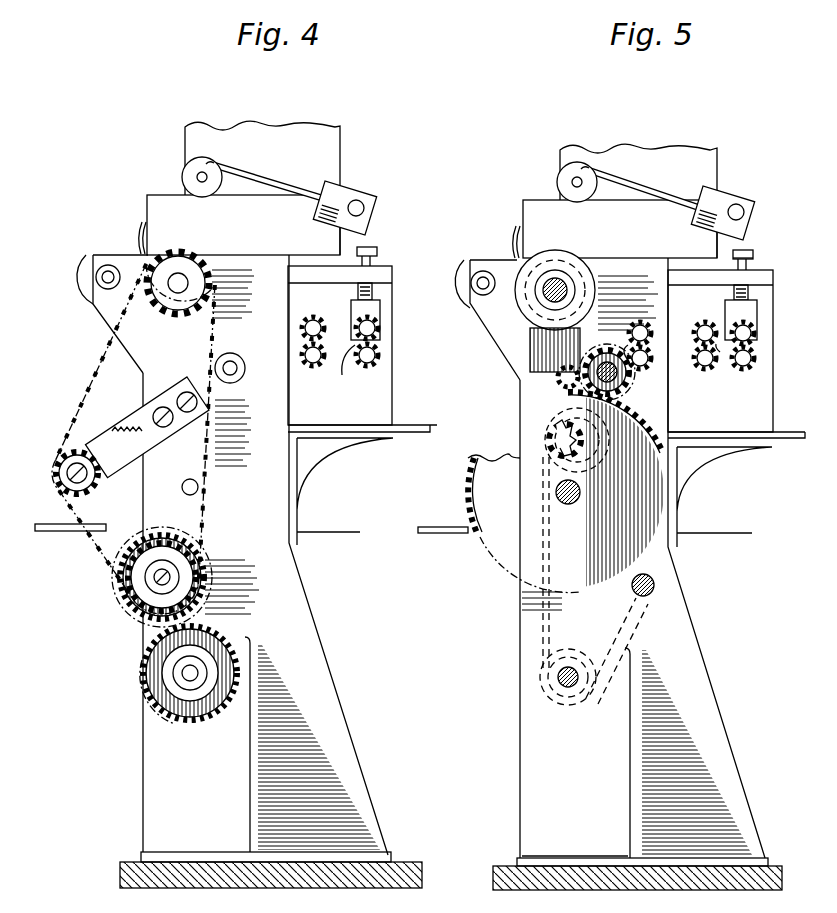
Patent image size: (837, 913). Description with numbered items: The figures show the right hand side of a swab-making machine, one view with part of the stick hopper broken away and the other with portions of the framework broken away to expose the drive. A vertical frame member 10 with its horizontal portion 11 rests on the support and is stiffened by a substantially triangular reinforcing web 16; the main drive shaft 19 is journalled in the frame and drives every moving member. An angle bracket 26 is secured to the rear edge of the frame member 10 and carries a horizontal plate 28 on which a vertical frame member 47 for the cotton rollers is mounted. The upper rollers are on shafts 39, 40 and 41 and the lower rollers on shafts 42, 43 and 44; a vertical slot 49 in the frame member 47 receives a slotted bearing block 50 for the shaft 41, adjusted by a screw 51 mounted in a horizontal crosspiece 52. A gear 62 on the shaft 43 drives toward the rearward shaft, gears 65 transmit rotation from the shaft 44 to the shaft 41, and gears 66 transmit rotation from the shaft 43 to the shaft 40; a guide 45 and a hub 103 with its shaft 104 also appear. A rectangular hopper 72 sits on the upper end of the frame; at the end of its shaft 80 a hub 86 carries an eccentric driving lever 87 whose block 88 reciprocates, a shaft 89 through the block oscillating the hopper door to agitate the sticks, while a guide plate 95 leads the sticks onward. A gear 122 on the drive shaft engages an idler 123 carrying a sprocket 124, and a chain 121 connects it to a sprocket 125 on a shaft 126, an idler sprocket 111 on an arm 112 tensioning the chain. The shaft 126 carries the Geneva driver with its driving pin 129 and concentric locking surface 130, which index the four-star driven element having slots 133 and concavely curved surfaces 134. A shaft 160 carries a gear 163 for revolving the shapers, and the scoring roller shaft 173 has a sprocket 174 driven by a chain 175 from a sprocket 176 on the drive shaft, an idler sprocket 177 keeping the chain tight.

In FIG. 4, the vertical frame member 10 is at (148, 757).
In FIG. 5, the vertical frame member 10 is at (520, 808).
In FIG. 5, the horizontal portion 11 is at (548, 857).
In FIG. 5, the reinforcing web 16 is at (630, 780).
In FIG. 5, the main drive shaft 19 is at (575, 690).
In FIG. 4, the angle bracket 26 is at (297, 500).
In FIG. 5, the angle bracket 26 is at (737, 450).
In FIG. 4, the horizontal plate 28 is at (420, 430).
In FIG. 5, the horizontal plate 28 is at (805, 440).
In FIG. 5, the shaft 39 is at (646, 323).
In FIG. 4, the shaft 40 is at (312, 318).
In FIG. 5, the shaft 40 is at (704, 322).
In FIG. 4, the shaft 41 is at (380, 328).
In FIG. 5, the shaft 41 is at (757, 333).
In FIG. 5, the shaft 42 is at (640, 372).
In FIG. 4, the shaft 43 is at (313, 363).
In FIG. 5, the shaft 43 is at (706, 370).
In FIG. 4, the shaft 44 is at (380, 357).
In FIG. 5, the shaft 44 is at (743, 370).
In FIG. 4, the guide 45 is at (342, 370).
In FIG. 4, the vertical frame member 47 is at (388, 405).
In FIG. 5, the vertical frame member 47 is at (770, 403).
In FIG. 4, the vertical slot 49 is at (378, 290).
In FIG. 5, the vertical slot 49 is at (760, 295).
In FIG. 4, the slotted bearing block 50 is at (382, 308).
In FIG. 5, the slotted bearing block 50 is at (760, 312).
In FIG. 5, the screw 51 is at (752, 262).
In FIG. 5, the horizontal crosspiece 52 is at (770, 270).
In FIG. 5, the gear 62 is at (629, 345).
In FIG. 5, the gears 65 is at (719, 352).
In FIG. 4, the gears 66 is at (300, 348).
In FIG. 5, the gears 66 is at (694, 326).
In FIG. 4, the hopper 72 is at (340, 160).
In FIG. 5, the hopper 72 is at (712, 175).
In FIG. 4, the shaft 80 is at (198, 177).
In FIG. 5, the shaft 80 is at (572, 182).
In FIG. 4, the hub 86 is at (202, 160).
In FIG. 5, the hub 86 is at (580, 165).
In FIG. 4, the driving lever 87 is at (270, 178).
In FIG. 5, the driving lever 87 is at (650, 193).
In FIG. 4, the block 88 is at (366, 190).
In FIG. 5, the block 88 is at (752, 220).
In FIG. 4, the shaft 89 is at (364, 208).
In FIG. 5, the shaft 89 is at (742, 208).
In FIG. 4, the guide plate 95 is at (142, 226).
In FIG. 5, the guide plate 95 is at (516, 234).
In FIG. 4, the hub 103 is at (83, 268).
In FIG. 5, the hub 103 is at (466, 292).
In FIG. 4, the shaft 104 is at (105, 270).
In FIG. 5, the shaft 104 is at (481, 272).
In FIG. 4, the idler sprocket 111 is at (96, 468).
In FIG. 4, the arm 112 is at (113, 428).
In FIG. 4, the chain 121 is at (66, 438).
In FIG. 4, the gear 122 is at (152, 675).
In FIG. 4, the idler 123 is at (142, 618).
In FIG. 4, the sprocket 124 is at (112, 598).
In FIG. 4, the sprocket 125 is at (172, 318).
In FIG. 4, the shaft 126 is at (184, 280).
In FIG. 5, the shaft 126 is at (562, 286).
In FIG. 5, the driving pin 129 is at (612, 312).
In FIG. 5, the concentric locking surface 130 is at (600, 292).
In FIG. 5, the slot 133 is at (522, 366).
In FIG. 5, the concavely curved surface 134 is at (538, 346).
In FIG. 4, the shaft 160 is at (198, 488).
In FIG. 5, the shaft 160 is at (574, 490).
In FIG. 5, the gear 163 is at (472, 500).
In FIG. 5, the shaft 173 is at (548, 450).
In FIG. 5, the sprocket 174 is at (550, 440).
In FIG. 5, the chain 175 is at (645, 620).
In FIG. 5, the sprocket 176 is at (570, 656).
In FIG. 5, the idler sprocket 177 is at (626, 600).